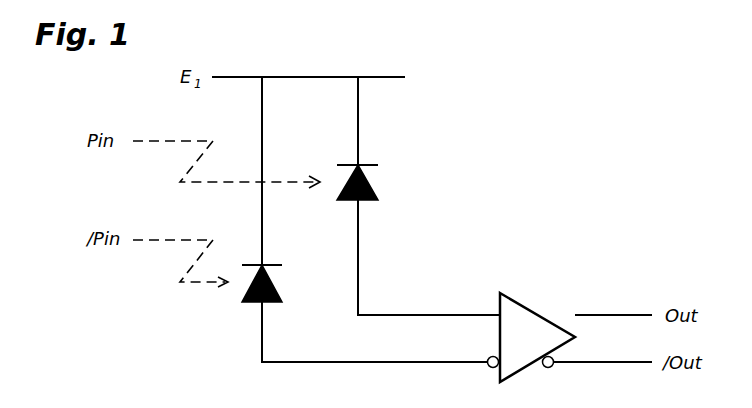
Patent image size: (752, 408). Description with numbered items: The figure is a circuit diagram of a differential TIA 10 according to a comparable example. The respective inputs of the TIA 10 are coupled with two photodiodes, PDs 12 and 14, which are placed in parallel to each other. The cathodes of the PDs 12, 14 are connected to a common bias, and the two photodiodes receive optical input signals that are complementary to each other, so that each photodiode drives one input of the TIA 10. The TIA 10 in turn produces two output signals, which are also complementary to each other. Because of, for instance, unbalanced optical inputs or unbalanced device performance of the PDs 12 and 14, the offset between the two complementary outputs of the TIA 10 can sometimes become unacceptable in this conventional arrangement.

The differential TIA 10 is at (510, 296).
The PD 12 is at (368, 181).
The PD 14 is at (249, 302).